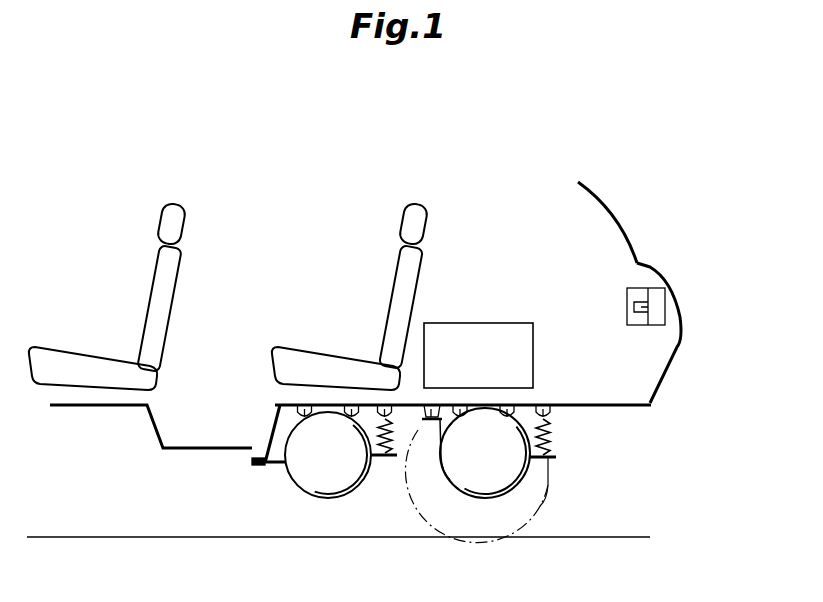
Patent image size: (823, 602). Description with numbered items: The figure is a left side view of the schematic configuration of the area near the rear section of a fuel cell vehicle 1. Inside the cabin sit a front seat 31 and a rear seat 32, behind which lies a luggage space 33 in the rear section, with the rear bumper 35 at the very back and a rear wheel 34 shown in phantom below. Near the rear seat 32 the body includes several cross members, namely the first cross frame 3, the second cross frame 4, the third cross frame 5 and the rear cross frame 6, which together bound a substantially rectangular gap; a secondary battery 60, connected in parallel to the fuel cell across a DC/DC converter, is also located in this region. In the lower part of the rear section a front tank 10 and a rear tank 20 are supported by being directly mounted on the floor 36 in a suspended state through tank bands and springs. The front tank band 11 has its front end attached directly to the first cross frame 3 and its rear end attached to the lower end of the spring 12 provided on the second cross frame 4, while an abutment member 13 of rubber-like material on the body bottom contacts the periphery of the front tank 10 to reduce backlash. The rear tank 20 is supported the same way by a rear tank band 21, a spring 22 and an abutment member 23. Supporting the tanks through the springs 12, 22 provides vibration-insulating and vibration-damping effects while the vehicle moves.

The fuel cell vehicle 1 is at (664, 146).
The first cross frame 3 is at (255, 449).
The second cross frame 4 is at (387, 405).
The third cross frame 5 is at (436, 405).
The rear cross frame 6 is at (550, 407).
The front tank 10 is at (312, 472).
The front tank band 11 is at (345, 501).
The spring 12 is at (394, 438).
The abutment member 13 is at (351, 405).
The rear tank 20 is at (493, 478).
The rear tank band 21 is at (478, 502).
The spring 22 is at (548, 430).
The abutment member 23 is at (509, 405).
The front seat 31 is at (160, 280).
The rear seat 32 is at (421, 255).
The luggage space 33 is at (617, 321).
The rear wheel 34 is at (548, 485).
The rear bumper 35 is at (676, 362).
The floor 36 is at (561, 401).
The secondary battery 60 is at (487, 327).